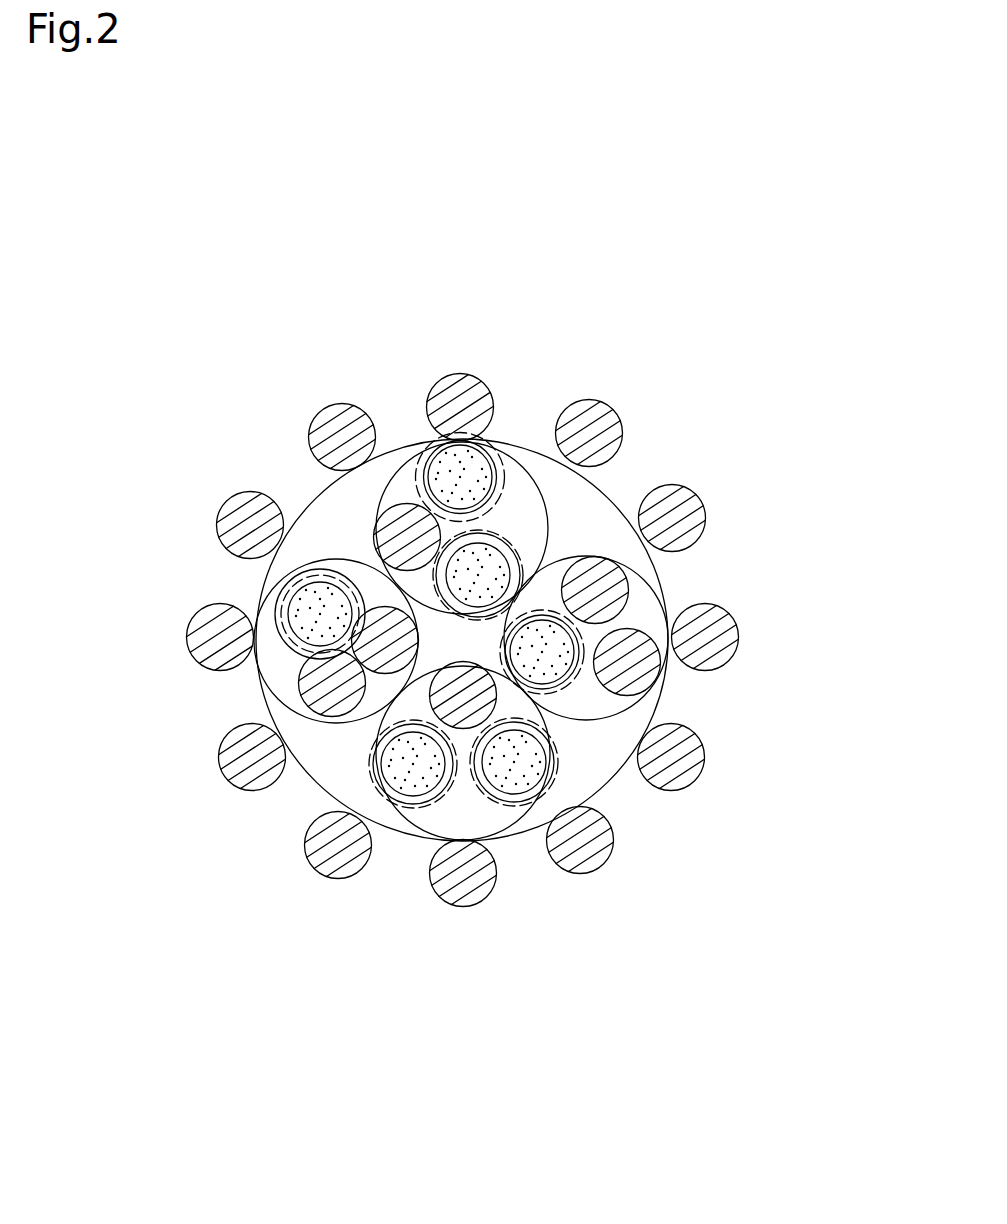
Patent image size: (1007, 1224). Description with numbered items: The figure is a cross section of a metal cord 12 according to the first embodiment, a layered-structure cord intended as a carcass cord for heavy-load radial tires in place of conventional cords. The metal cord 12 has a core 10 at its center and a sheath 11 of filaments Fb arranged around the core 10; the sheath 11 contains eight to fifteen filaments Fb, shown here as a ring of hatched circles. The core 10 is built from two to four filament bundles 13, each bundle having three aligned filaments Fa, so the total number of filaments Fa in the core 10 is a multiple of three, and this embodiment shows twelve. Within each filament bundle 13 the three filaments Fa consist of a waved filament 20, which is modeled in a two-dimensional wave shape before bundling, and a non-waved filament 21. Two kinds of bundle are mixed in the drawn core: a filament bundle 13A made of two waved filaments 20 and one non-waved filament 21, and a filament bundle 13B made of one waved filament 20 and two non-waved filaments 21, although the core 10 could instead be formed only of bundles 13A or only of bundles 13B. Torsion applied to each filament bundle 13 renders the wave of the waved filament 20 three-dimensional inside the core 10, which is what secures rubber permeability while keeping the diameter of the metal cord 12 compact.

The core 10 is at (532, 453).
The sheath 11 is at (400, 435).
The metal cord 12 is at (604, 264).
The filament bundle 13 is at (804, 568).
The filament bundle 13A is at (505, 455).
The filament bundle 13B is at (273, 586).
The waved filament 20 is at (565, 642).
The non-waved filament 21 is at (618, 582).
The filament Fa is at (398, 790).
The filament Fb is at (322, 430).